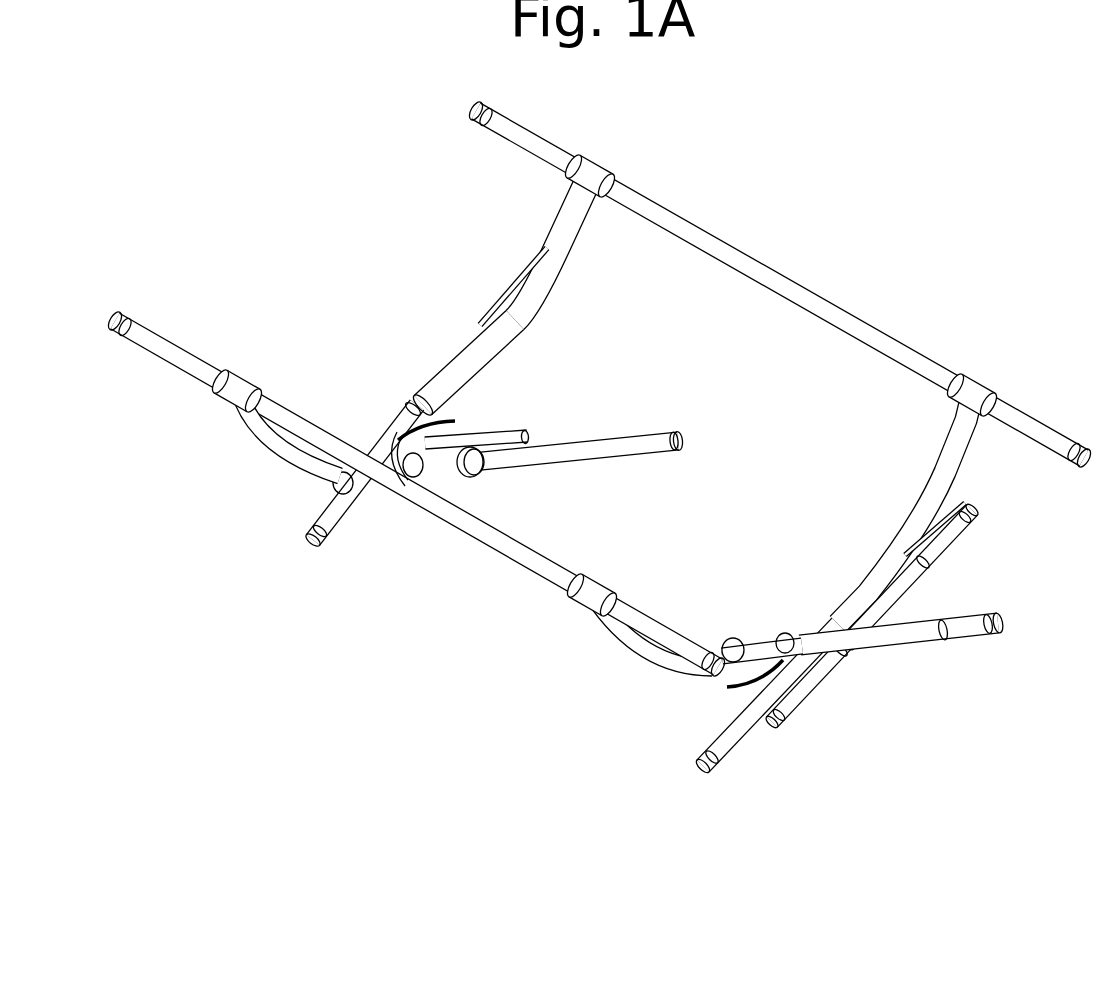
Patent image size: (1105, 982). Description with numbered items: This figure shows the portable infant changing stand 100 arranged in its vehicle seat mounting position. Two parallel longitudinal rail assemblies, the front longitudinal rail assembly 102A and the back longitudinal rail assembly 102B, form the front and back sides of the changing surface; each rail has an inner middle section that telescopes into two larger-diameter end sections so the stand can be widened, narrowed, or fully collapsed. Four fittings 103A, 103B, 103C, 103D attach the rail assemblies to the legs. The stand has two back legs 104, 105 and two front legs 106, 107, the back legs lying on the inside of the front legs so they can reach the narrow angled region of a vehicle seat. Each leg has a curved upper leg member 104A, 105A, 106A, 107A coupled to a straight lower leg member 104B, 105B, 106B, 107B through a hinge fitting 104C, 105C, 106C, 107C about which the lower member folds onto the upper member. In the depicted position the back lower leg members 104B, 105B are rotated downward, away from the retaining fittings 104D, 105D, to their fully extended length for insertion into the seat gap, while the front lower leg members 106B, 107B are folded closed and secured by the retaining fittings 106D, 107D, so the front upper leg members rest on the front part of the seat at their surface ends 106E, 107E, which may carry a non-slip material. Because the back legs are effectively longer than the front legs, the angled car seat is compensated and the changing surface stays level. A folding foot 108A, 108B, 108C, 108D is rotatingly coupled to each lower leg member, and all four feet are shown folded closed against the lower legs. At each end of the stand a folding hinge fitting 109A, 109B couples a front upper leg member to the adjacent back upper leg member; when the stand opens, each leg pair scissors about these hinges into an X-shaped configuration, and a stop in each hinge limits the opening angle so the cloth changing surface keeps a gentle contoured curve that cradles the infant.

The stand 100 is at (269, 130).
The front longitudinal rail assembly 102A is at (782, 287).
The back longitudinal rail assembly 102B is at (498, 540).
The fitting 103A is at (578, 170).
The fitting 103B is at (968, 392).
The fitting 103C is at (590, 602).
The fitting 103D is at (236, 404).
The back leg 104 is at (258, 444).
The upper leg member 104A is at (307, 457).
The lower leg member 104B is at (600, 452).
The hinge fitting 104C is at (483, 464).
The retaining fitting 104D is at (418, 472).
The back leg 105 is at (601, 645).
The upper leg member 105A is at (663, 660).
The lower leg member 105B is at (903, 634).
The hinge fitting 105C is at (792, 635).
The retaining fitting 105D is at (722, 640).
The front leg 106 is at (549, 220).
The upper leg member 106A is at (563, 232).
The lower leg member 106B is at (467, 348).
The hinge fitting 106C is at (348, 476).
The retaining fitting 106D is at (412, 398).
The surface end 106E is at (316, 549).
The front leg 107 is at (940, 434).
The upper leg member 107A is at (898, 541).
The lower leg member 107B is at (812, 682).
The hinge fitting 107C is at (778, 724).
The retaining fitting 107D is at (836, 652).
The surface end 107E is at (706, 770).
The folding foot 108A is at (685, 430).
The folding foot 108B is at (977, 630).
The folding foot 108C is at (510, 288).
The folding foot 108D is at (960, 522).
The folding hinge fitting 109A is at (453, 424).
The folding hinge fitting 109B is at (731, 680).